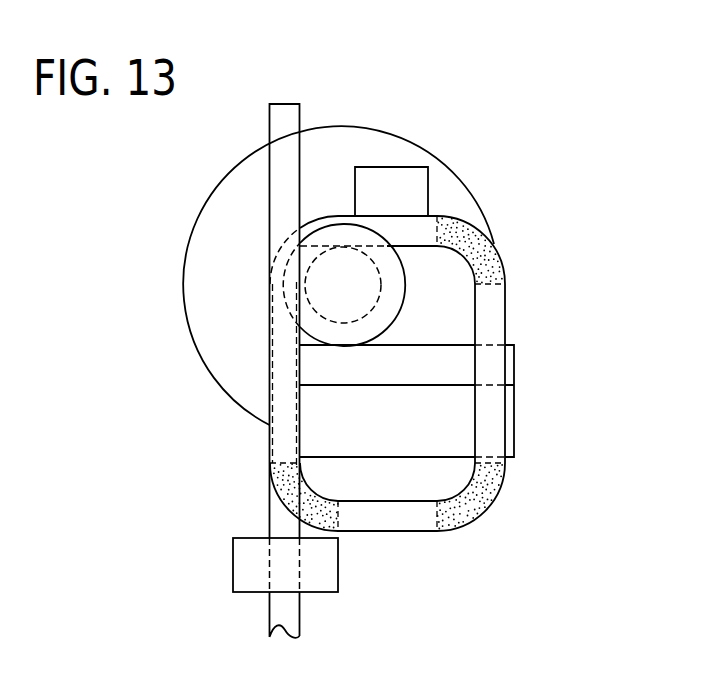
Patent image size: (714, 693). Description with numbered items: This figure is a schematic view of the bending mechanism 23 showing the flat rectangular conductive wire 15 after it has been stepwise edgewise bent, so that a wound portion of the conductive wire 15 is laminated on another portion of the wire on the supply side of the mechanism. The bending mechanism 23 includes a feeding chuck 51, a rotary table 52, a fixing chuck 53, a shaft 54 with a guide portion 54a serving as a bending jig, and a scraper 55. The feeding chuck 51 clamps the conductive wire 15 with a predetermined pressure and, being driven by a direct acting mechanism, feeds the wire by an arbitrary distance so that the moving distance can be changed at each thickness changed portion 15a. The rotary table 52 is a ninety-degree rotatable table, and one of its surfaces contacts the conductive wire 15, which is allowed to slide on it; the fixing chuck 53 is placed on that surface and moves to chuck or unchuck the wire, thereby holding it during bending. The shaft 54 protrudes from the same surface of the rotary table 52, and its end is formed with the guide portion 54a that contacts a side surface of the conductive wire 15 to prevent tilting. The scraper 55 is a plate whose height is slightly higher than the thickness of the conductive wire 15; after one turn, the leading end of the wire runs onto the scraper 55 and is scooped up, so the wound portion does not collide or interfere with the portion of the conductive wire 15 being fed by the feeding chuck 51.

The flat rectangular conductive wire 15 is at (277, 123).
The thickness changed portion 15a is at (478, 500).
The bending mechanism 23 is at (511, 160).
The feeding chuck 51 is at (327, 565).
The rotary table 52 is at (347, 138).
The fixing chuck 53 is at (408, 177).
The shaft 54 is at (378, 298).
The guide portion 54a is at (375, 315).
The scraper 55 is at (467, 409).